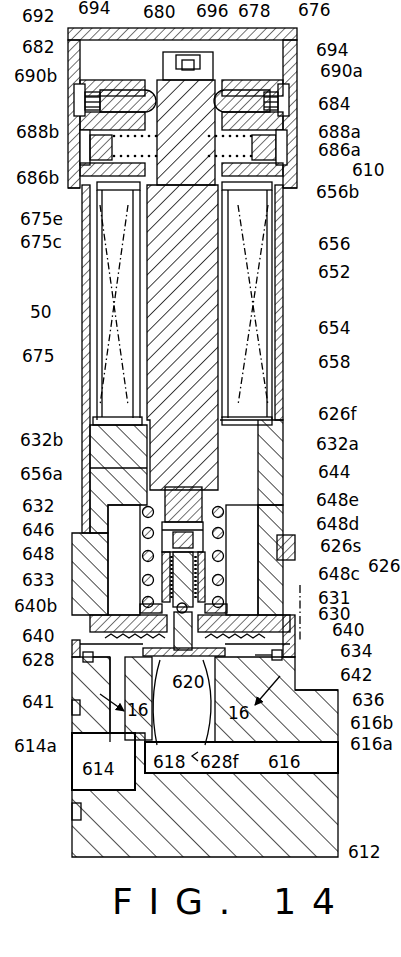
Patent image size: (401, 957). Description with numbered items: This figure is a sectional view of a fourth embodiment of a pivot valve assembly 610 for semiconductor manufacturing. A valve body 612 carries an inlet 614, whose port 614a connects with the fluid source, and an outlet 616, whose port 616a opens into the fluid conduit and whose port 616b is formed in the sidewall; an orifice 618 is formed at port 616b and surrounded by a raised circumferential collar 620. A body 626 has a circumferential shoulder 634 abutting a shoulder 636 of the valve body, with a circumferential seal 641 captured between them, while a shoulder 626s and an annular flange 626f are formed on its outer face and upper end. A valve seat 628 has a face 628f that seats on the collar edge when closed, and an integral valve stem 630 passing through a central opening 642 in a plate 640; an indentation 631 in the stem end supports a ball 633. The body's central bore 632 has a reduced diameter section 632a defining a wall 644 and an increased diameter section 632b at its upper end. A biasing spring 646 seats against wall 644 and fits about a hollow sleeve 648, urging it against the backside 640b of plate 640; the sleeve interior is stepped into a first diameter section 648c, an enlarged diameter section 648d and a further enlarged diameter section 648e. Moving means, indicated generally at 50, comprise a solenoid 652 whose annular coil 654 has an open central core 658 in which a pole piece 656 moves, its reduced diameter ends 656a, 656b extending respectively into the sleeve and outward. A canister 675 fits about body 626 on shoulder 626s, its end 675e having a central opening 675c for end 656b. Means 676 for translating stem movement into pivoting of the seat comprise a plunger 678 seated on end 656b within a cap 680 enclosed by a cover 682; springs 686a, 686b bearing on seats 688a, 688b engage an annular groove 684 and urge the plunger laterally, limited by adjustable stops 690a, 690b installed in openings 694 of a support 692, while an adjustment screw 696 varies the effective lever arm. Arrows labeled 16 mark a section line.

The actuator assembly 50 is at (78, 328).
The valve assembly 610 is at (308, 182).
The valve body 612 is at (342, 820).
The inlet 614 is at (114, 778).
The port 614a is at (72, 768).
The outlet 616 is at (300, 771).
The port 616a is at (338, 763).
The port 616b is at (250, 728).
The orifice 618 is at (131, 699).
The circumferential collar 620 is at (176, 692).
The body 626 is at (296, 568).
The annular flange 626f is at (225, 413).
The circumferential shoulder 626s is at (296, 546).
The valve seat 628 is at (136, 648).
The face 628f is at (195, 756).
The valve stem 630 is at (280, 617).
The indentation 631 is at (302, 597).
The central bore 632 is at (120, 520).
The reduced diameter section 632a is at (205, 488).
The increased diameter section 632b is at (145, 440).
The ball 633 is at (150, 590).
The circumferential shoulder 634 is at (282, 656).
The circumferential shoulder 636 is at (300, 692).
The plate 640 is at (330, 630).
The backside 640b is at (66, 655).
The circumferential seal 641 is at (80, 705).
The central opening 642 is at (212, 668).
The wall 644 is at (232, 510).
The biasing spring 646 is at (140, 536).
The sleeve 648 is at (146, 556).
The first diameter section 648c is at (260, 588).
The enlarged diameter section 648d is at (280, 546).
The further enlarged diameter section 648e is at (265, 505).
The solenoid 652 is at (278, 293).
The annular coil 654 is at (265, 318).
The pole piece 656 is at (225, 248).
The reduced diameter section 656a is at (150, 468).
The reduced diameter section 656b is at (250, 183).
The open central core 658 is at (225, 365).
The canister 675 is at (78, 372).
The central opening 675c is at (118, 205).
The end 675e is at (135, 192).
The means for translating movement 676 is at (274, 44).
The plunger 678 is at (213, 88).
The cap 680 is at (186, 30).
The cover 682 is at (68, 34).
The annular groove 684 is at (268, 112).
The spring 686a is at (262, 166).
The spring 686b is at (100, 170).
The seat 688a is at (276, 146).
The seat 688b is at (88, 148).
The stop 690a is at (258, 82).
The stop 690b is at (108, 80).
The support 692 is at (78, 32).
The openings 694 is at (314, 52).
The adjustment screw 696 is at (206, 52).
The section line 16 is at (190, 693).